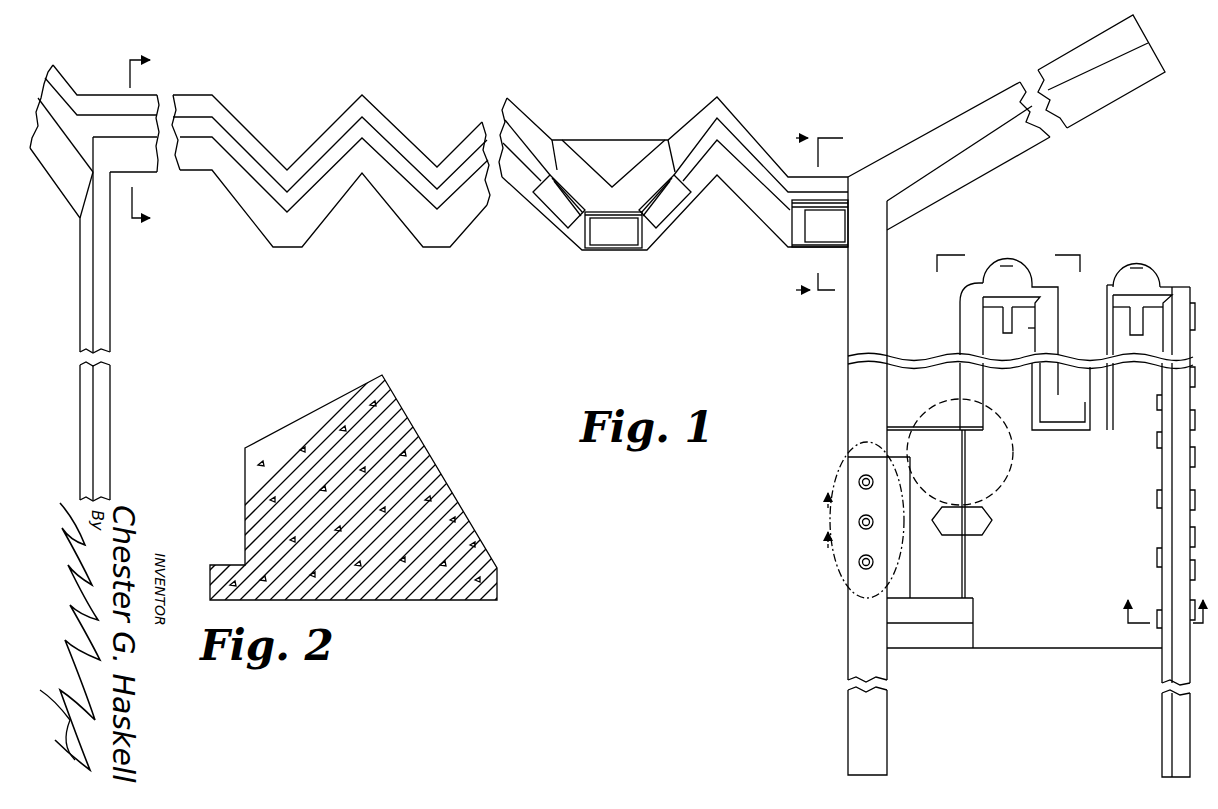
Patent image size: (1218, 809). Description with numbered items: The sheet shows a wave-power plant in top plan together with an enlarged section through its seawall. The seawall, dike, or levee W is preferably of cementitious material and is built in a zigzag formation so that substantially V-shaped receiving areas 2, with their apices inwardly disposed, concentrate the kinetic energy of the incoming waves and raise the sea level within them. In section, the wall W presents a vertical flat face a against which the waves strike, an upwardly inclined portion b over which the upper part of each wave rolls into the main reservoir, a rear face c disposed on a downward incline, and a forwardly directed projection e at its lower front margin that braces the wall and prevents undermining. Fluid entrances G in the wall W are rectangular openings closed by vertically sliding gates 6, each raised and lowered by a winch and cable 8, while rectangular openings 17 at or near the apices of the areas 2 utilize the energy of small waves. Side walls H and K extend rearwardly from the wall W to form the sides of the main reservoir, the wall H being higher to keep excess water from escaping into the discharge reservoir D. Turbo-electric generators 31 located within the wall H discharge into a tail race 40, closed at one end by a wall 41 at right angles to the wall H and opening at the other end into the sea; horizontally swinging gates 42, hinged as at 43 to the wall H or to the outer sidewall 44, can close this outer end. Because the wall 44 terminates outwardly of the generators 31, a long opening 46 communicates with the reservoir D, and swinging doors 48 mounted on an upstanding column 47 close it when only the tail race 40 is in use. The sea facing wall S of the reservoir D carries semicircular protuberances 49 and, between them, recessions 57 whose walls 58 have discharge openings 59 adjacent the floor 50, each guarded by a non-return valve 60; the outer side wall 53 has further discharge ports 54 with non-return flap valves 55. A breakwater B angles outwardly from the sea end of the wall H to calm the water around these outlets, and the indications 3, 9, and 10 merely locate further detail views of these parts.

In FIG. 1, the receiving areas 2 is at (377, 143).
In FIG. 1, the section line 3- 3 is at (827, 520).
In FIG. 1, the vertically sliding gates 6 is at (836, 268).
In FIG. 1, the cable 8 is at (1007, 278).
In FIG. 1, the section line 9- 9 is at (1168, 601).
In FIG. 1, the detail circle 10 is at (964, 452).
In FIG. 1, the rectangular openings 17 is at (557, 198).
In FIG. 1, the turbo-electric generators 31 is at (857, 482).
In FIG. 1, the tail race 40 is at (927, 453).
In FIG. 1, the wall 41 is at (945, 610).
In FIG. 1, the gates 42 is at (898, 433).
In FIG. 1, the hinged connection 43 is at (887, 428).
In FIG. 1, the outer sidewall of the tail race 44 is at (973, 317).
In FIG. 1, the opening 46 is at (968, 450).
In FIG. 1, the upstanding column 47 is at (967, 522).
In FIG. 1, the swinging doors 48 is at (985, 470).
In FIG. 1, the protuberances 49 is at (1004, 278).
In FIG. 1, the bottom or floor of the reservoir D 50 is at (1083, 623).
In FIG. 1, the outer side wall of the reservoir D 53 is at (1182, 433).
In FIG. 1, the discharge ports 54 is at (1163, 453).
In FIG. 1, the non-return flap valve 55 is at (1187, 455).
In FIG. 1, the recession 57 is at (1088, 315).
In FIG. 1, the walls of the recession 58 is at (1050, 407).
In FIG. 1, the discharge openings 59 is at (983, 343).
In FIG. 1, the non-return valve 60 is at (1062, 345).
In FIG. 1, the seawall, dike, or levee W is at (192, 120).
In FIG. 2, the seawall, dike, or levee W is at (390, 600).
In FIG. 1, the vertical flat face a is at (233, 147).
In FIG. 2, the vertical flat face a is at (245, 520).
In FIG. 1, the upwardly inclined portions b is at (380, 147).
In FIG. 2, the upwardly inclined portions b is at (322, 403).
In FIG. 1, the rear face c is at (192, 153).
In FIG. 2, the rear face c is at (430, 472).
In FIG. 1, the forwardly directed projection e is at (323, 140).
In FIG. 2, the forwardly directed projection e is at (210, 587).
In FIG. 1, the side wall K is at (97, 310).
In FIG. 1, the breakwater or sea wall B is at (955, 143).
In FIG. 1, the fluid entrances G is at (810, 250).
In FIG. 1, the side wall H is at (860, 311).
In FIG. 1, the front or sea facing wall of the reservoir D S is at (1027, 300).
In FIG. 1, the discharge reservoir D is at (1064, 513).